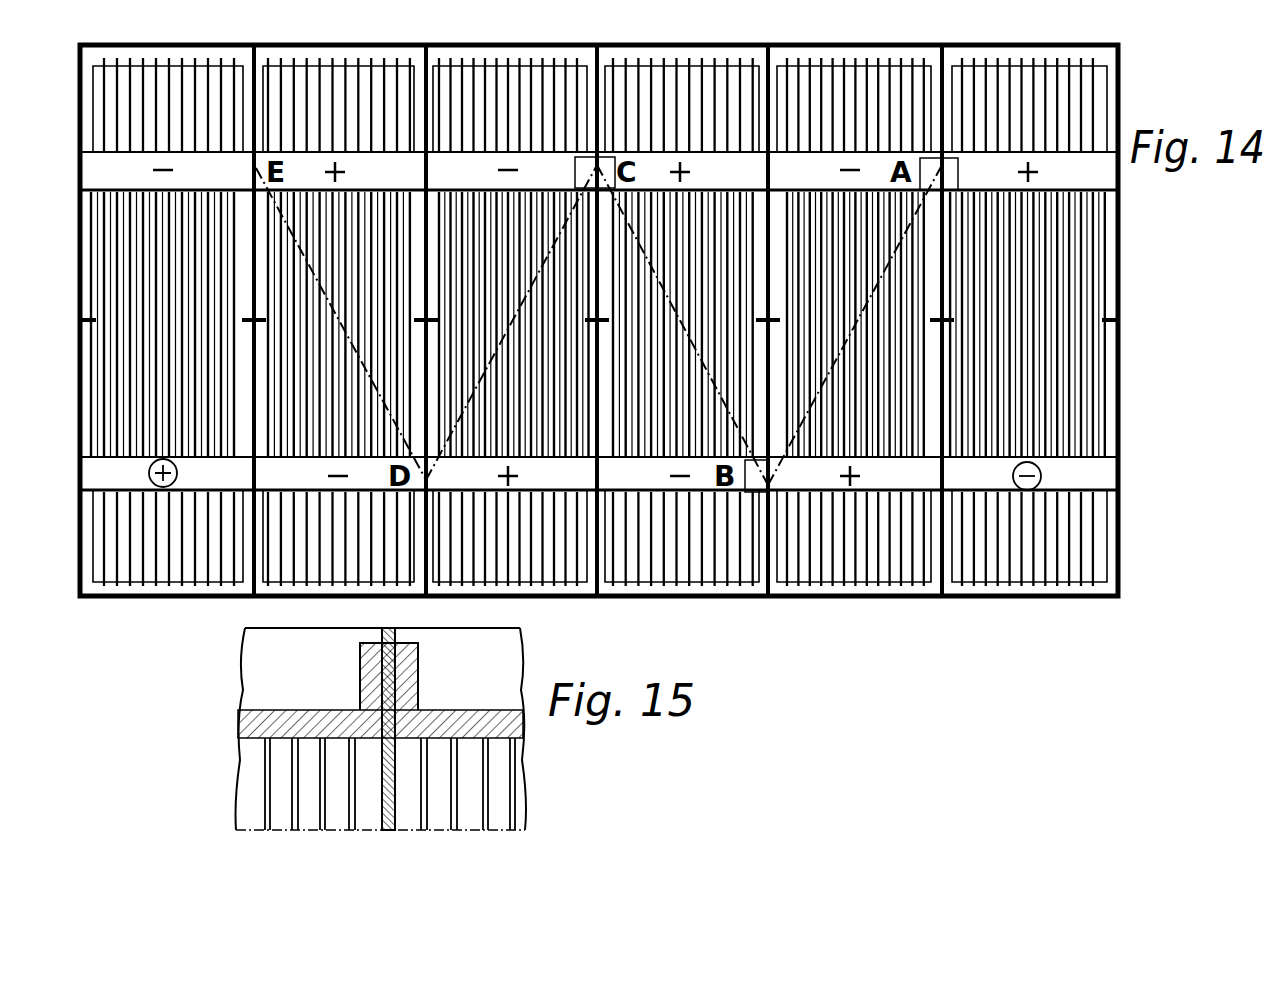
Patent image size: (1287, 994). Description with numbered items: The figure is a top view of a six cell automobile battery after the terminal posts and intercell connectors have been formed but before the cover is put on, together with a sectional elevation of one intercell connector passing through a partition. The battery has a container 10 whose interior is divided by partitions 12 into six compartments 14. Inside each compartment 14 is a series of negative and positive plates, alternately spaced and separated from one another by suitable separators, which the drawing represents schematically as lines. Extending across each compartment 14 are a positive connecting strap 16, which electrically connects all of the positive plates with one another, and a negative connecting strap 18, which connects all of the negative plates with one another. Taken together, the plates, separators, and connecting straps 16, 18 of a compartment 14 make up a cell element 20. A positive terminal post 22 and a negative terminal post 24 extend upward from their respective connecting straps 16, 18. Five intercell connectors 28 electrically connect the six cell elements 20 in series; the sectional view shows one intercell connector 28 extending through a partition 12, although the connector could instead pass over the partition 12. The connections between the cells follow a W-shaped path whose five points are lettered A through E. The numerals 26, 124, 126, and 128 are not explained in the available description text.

In FIG. 14, the container 10 is at (458, 46).
In FIG. 14, the partition 12 is at (428, 243).
In FIG. 15, the partition 12 is at (395, 786).
In FIG. 14, the compartment 14 is at (177, 66).
In FIG. 14, the positive connecting strap 16 is at (382, 160).
In FIG. 14, the negative connecting strap 18 is at (208, 152).
In FIG. 14, the cell element 20 is at (116, 370).
In FIG. 14, the positive terminal post 22 is at (150, 486).
In FIG. 14, the negative terminal post 24 is at (1027, 490).
In FIG. 14, the series interconnect 26 is at (455, 505).
In FIG. 14, the intercell connector 28 is at (600, 160).
In FIG. 15, the intercell connector 28 is at (418, 655).
In FIG. 14, the electrode strip 124 is at (760, 152).
In FIG. 14, the electrode strip 126 is at (774, 152).
In FIG. 14, the interconnect tab 128 is at (768, 322).